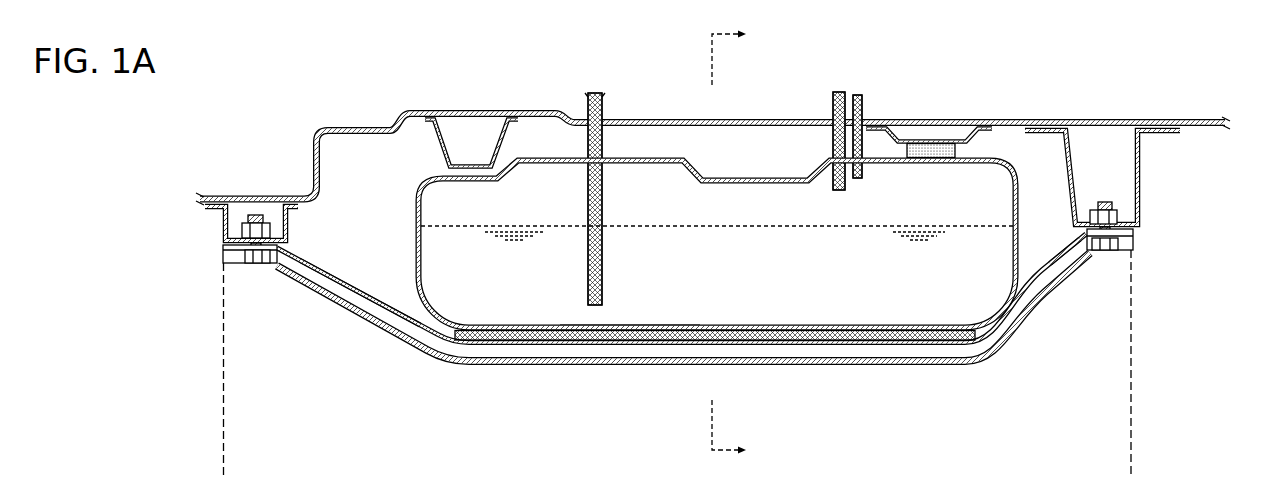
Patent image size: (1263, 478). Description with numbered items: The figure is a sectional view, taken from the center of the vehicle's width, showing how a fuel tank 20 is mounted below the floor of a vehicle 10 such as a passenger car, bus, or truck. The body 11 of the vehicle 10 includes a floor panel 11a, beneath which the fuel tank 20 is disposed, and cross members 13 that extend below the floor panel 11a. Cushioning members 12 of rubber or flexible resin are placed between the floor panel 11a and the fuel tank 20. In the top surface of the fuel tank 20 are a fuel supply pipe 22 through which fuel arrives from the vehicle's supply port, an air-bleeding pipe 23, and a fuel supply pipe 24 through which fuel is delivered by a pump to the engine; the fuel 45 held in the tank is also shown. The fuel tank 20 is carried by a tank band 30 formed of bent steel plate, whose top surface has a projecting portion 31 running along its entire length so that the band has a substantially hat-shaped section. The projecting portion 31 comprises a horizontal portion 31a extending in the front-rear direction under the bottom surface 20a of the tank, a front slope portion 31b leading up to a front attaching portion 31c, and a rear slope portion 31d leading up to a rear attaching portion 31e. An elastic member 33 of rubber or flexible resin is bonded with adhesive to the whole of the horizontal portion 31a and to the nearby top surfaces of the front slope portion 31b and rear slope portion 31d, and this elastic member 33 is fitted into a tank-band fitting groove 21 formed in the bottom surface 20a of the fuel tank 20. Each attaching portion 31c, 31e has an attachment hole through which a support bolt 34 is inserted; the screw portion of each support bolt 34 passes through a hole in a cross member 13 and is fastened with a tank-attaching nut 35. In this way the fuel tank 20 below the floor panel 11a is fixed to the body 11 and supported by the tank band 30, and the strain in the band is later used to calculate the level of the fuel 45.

The vehicle 10 is at (280, 105).
The body 11 is at (357, 124).
The floor panel 11a is at (456, 108).
The cushioning member 12 is at (503, 152).
The cross member 13 is at (222, 222).
The fuel tank 20 is at (1013, 166).
The bottom surface 20a is at (618, 334).
The tank-band fitting groove 21 is at (956, 366).
The fuel supply pipe 22 is at (831, 110).
The air-bleeding pipe 23 is at (864, 108).
The fuel supply pipe 24 is at (604, 110).
The tank band 30 is at (307, 281).
The projecting portion 31 is at (536, 346).
The horizontal portion 31a is at (899, 347).
The front slope portion 31b is at (361, 297).
The front attaching portion 31c is at (224, 266).
The rear slope portion 31d is at (1038, 292).
The rear attaching portion 31e is at (1135, 240).
The elastic member 33 is at (712, 332).
The support bolt 34 is at (257, 265).
The tank-attaching nut 35 is at (271, 226).
The fuel 45 is at (908, 226).